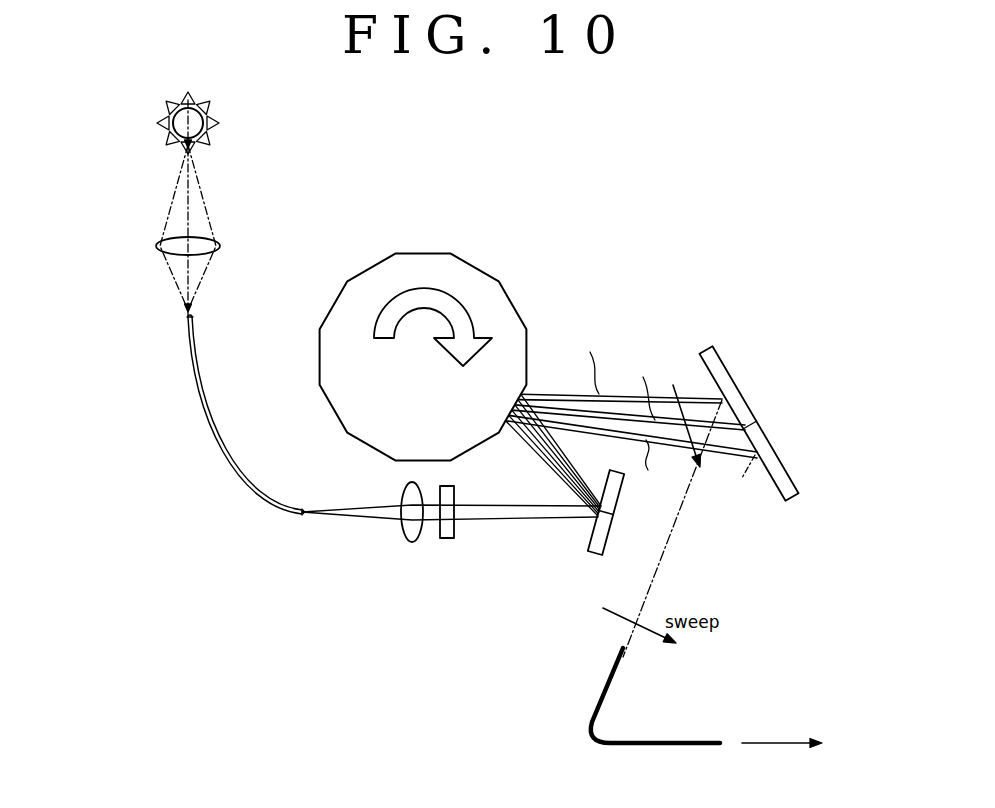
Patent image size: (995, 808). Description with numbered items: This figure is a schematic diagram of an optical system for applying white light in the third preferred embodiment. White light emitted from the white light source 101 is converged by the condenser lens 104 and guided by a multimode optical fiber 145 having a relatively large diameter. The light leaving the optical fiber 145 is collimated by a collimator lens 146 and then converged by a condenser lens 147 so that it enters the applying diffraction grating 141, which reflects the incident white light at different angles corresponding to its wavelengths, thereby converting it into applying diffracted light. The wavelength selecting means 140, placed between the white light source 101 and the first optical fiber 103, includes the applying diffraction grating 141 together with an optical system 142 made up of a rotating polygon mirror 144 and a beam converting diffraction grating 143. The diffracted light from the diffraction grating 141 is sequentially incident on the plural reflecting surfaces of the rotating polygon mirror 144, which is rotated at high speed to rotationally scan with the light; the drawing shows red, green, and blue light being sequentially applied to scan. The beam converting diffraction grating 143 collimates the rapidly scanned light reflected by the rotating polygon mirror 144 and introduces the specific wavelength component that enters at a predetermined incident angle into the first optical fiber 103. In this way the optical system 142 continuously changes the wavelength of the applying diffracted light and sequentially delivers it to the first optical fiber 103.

The white light source 101 is at (157, 123).
The condenser lens 104 is at (157, 245).
The multimode optical fiber 145 is at (198, 392).
The collimator lens 146 is at (408, 543).
The condenser lens 147 is at (448, 540).
The applying diffraction grating 141 is at (589, 540).
The rotating polygon mirror 144 is at (517, 311).
The wavelength selecting means 140 is at (514, 195).
The optical system 142 is at (612, 306).
The beam converting diffraction grating 143 is at (725, 372).
The first optical fiber 103 is at (589, 727).